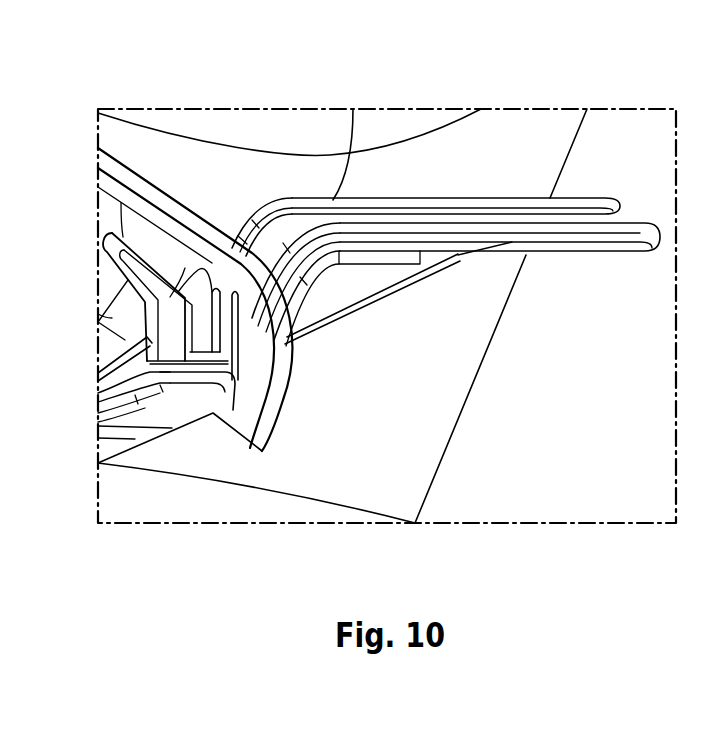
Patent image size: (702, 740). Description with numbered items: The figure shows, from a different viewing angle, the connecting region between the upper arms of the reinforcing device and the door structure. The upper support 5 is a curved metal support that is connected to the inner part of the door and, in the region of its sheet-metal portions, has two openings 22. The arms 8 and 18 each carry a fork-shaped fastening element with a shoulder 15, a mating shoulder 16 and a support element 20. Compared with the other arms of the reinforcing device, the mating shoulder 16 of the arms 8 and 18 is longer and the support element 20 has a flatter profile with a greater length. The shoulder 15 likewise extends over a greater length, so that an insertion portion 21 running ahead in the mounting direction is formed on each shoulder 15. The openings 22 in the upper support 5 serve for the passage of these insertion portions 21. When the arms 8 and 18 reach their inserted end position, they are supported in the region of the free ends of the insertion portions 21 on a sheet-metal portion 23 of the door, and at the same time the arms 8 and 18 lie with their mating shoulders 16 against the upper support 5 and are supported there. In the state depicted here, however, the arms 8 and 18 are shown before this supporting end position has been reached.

The upper support 5 is at (163, 150).
The arm 8 is at (192, 425).
The arm 18 is at (167, 418).
The shoulder 15 is at (285, 250).
The mating shoulder 16 is at (130, 281).
The support element 20 is at (113, 379).
The insertion portion 21 is at (525, 258).
The opening 22 is at (210, 268).
The sheet-metal portion 23 is at (632, 185).